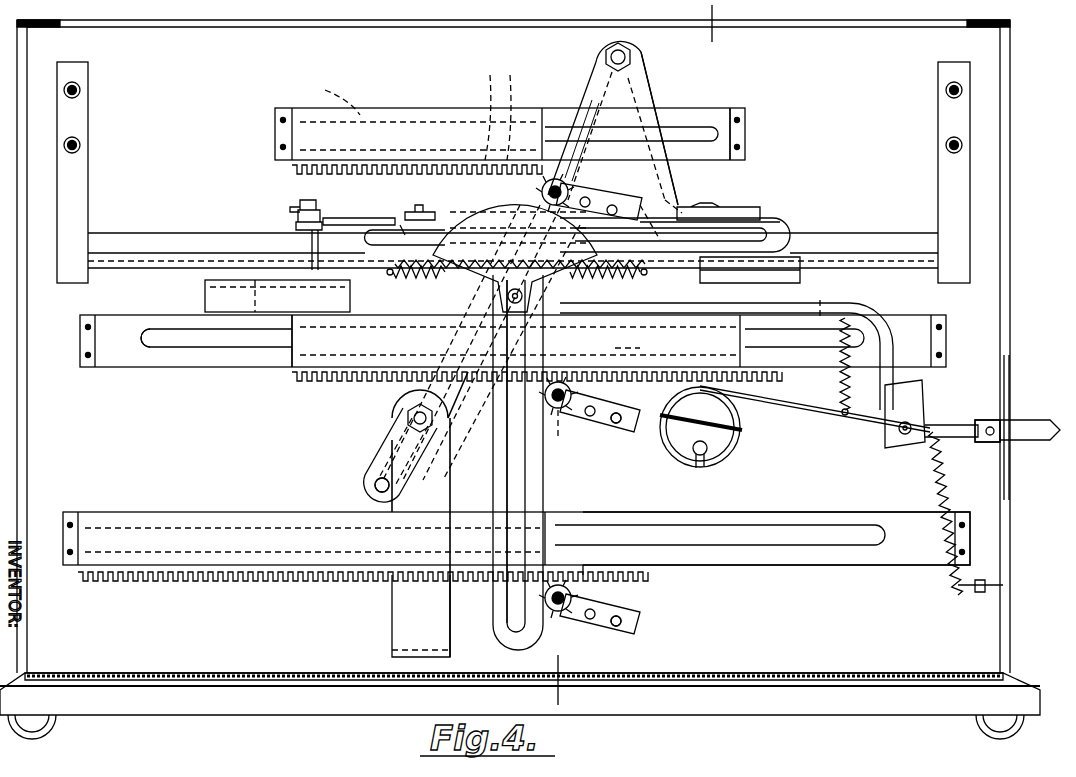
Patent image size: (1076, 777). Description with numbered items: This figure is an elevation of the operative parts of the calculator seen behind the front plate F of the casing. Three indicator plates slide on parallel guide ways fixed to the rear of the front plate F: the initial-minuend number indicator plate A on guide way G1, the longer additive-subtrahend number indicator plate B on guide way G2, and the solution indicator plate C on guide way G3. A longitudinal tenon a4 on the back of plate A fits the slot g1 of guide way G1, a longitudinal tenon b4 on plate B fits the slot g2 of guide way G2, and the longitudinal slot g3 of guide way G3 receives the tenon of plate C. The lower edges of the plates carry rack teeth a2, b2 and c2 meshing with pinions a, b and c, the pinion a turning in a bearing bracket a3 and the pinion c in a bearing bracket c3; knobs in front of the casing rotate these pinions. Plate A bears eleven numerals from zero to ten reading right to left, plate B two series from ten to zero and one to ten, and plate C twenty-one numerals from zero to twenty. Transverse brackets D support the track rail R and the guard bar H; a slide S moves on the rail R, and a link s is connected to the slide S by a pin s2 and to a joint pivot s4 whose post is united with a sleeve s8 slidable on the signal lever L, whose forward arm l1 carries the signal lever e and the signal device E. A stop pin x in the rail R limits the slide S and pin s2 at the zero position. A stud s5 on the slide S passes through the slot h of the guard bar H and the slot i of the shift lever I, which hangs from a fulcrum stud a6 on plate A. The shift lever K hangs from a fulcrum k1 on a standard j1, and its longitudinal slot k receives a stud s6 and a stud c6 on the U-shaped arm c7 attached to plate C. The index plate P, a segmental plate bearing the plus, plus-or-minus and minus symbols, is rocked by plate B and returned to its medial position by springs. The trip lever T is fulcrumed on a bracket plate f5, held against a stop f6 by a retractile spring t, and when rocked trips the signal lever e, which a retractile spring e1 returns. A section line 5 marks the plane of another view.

The front plate F is at (520, 379).
The transverse bracket D is at (78, 122).
The track rail R is at (895, 218).
The guard bar H is at (230, 253).
The initial-minuend number indicator plate A is at (467, 110).
The pinion a is at (560, 200).
The rack teeth a2 is at (295, 172).
The bearing bracket a3 is at (690, 190).
The longitudinal tenon a4 is at (350, 115).
The fulcrum stud a6 is at (498, 105).
The slot g1 is at (745, 136).
The fulcrum k1 is at (612, 56).
The guide way G1 is at (670, 109).
The standard j1 is at (670, 178).
The stud s6 is at (652, 218).
The joint pivot s4 is at (310, 209).
The link s is at (359, 209).
The slot h is at (378, 232).
The stop pin x is at (400, 225).
The toggle pin s2 is at (421, 200).
The index plate P is at (475, 225).
The slide S is at (401, 287).
The signal lever L is at (885, 300).
The stud s5 is at (542, 286).
The sleeve s8 is at (277, 296).
The forward arm l1 is at (819, 298).
The guide way G2 is at (513, 341).
The slot g2 is at (165, 340).
The additive-subtrahend number indicator plate B is at (290, 345).
The rack teeth b2 is at (529, 395).
The longitudinal tenon b4 is at (618, 357).
The stud c6 is at (408, 416).
The shift lever K is at (365, 455).
The longitudinal slot k is at (375, 486).
The shift lever I is at (518, 462).
The slot i is at (512, 451).
The pinion b is at (582, 404).
The longitudinal slot g3 is at (640, 420).
The signal device E is at (701, 427).
The signal lever e is at (815, 410).
The retractile spring e1 is at (850, 382).
The trip lever T is at (1040, 438).
The bracket plate f5 is at (1012, 370).
The stop f6 is at (1005, 445).
The retractile spring t is at (955, 470).
The solution indicator plate C is at (140, 492).
The rack teeth c2 is at (140, 585).
The U-shaped arm c7 is at (421, 616).
The pinion c is at (578, 596).
The bearing bracket c3 is at (612, 625).
The guide way G3 is at (810, 570).
The section line 5- 5 is at (712, 12).